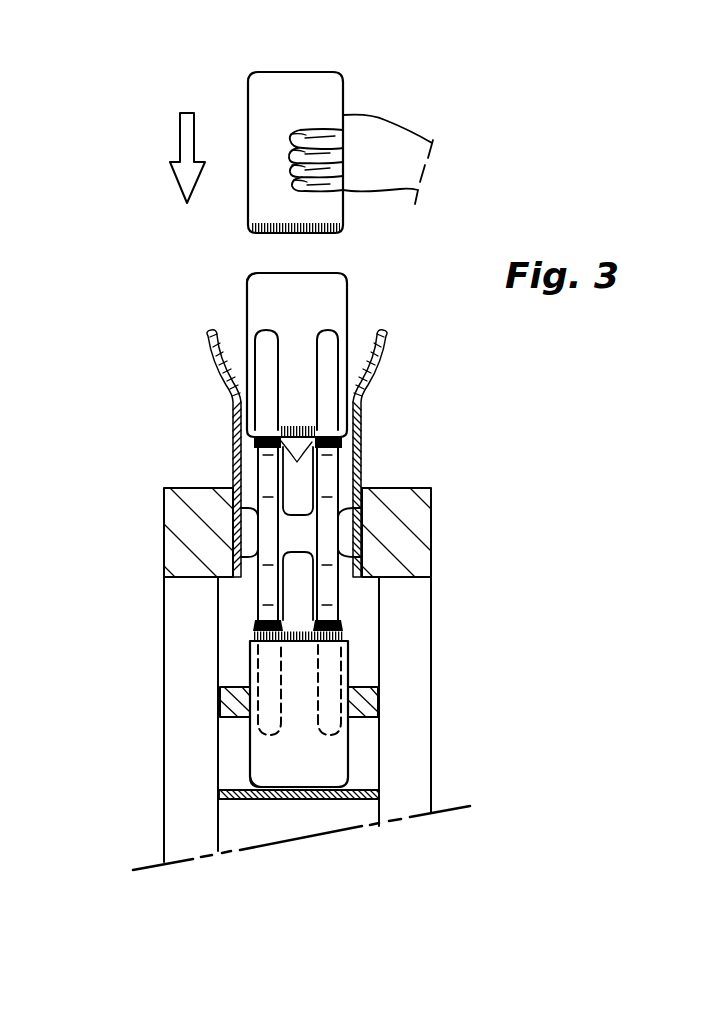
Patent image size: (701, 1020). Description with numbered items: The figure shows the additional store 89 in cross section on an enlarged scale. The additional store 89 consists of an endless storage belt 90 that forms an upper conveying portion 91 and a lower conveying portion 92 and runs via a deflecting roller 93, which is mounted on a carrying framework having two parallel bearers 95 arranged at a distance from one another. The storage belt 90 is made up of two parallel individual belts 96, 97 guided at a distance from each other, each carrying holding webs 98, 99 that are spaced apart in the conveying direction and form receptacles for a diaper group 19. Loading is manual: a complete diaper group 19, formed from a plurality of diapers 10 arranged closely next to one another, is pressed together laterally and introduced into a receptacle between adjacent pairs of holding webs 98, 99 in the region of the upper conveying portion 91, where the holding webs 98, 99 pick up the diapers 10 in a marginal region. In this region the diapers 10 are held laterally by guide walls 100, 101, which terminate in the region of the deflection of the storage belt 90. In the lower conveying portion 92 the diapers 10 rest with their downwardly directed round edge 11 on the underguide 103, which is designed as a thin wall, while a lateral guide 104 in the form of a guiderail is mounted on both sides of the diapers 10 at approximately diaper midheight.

The diaper 10 is at (334, 416).
The diaper group 19 is at (312, 92).
The round edge 11 is at (267, 273).
The additional store 89 is at (473, 228).
The storage belt 90 is at (285, 483).
The upper conveying portion 91 is at (483, 423).
The lower conveying portion 92 is at (363, 620).
The deflecting roller 93 is at (298, 527).
The bearer 95 is at (190, 527).
The first individual belt 96 is at (254, 443).
The second individual belt 97 is at (342, 442).
The holding web 98 is at (268, 350).
The holding web 99 is at (322, 350).
The guide wall 100 is at (233, 405).
The guide wall 101 is at (361, 410).
The underguide 103 is at (330, 803).
The lateral guide 104 is at (362, 702).